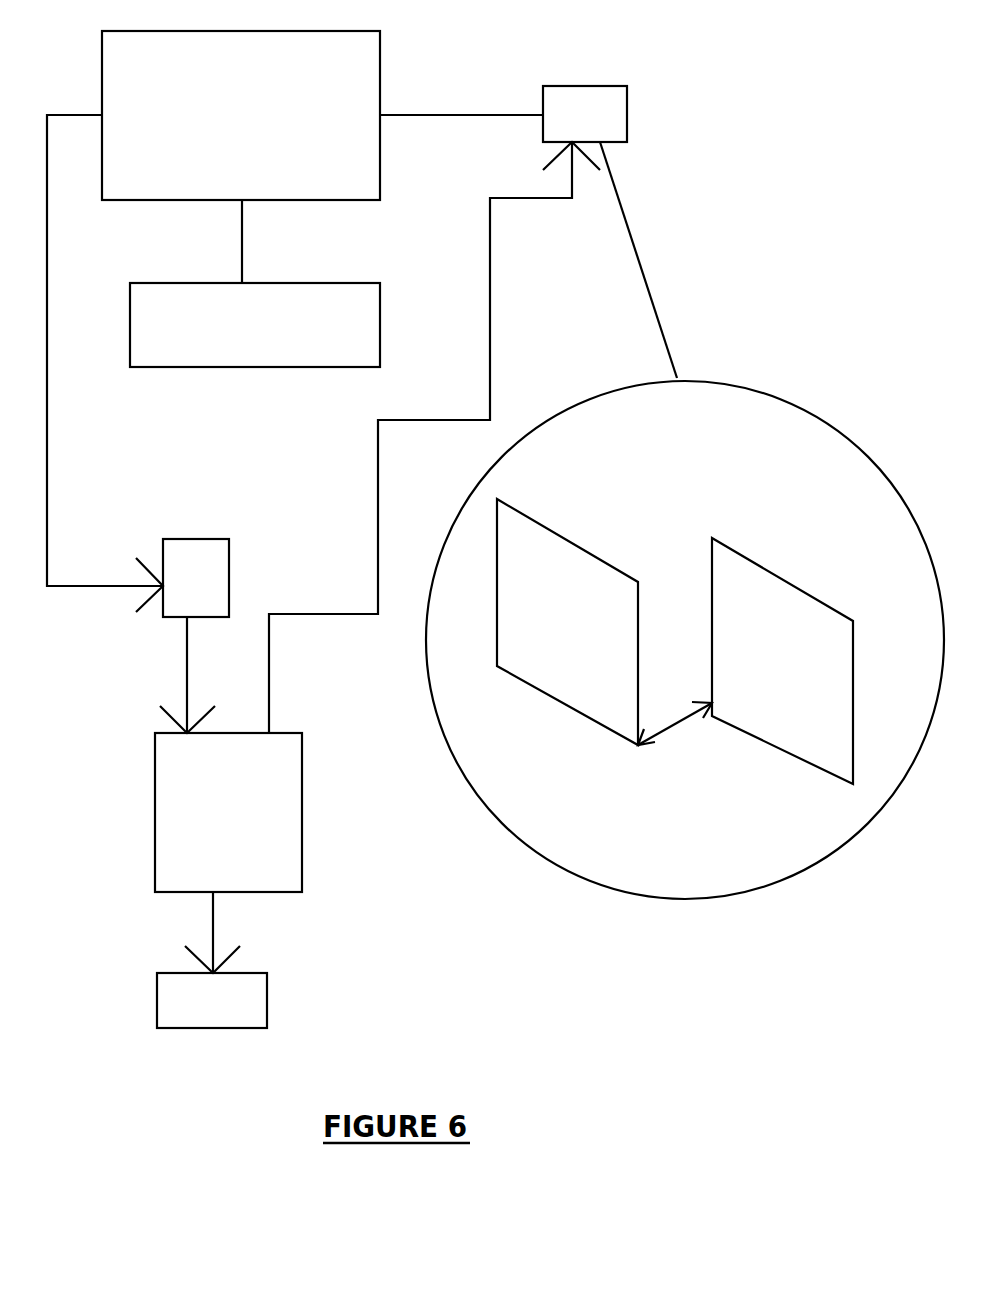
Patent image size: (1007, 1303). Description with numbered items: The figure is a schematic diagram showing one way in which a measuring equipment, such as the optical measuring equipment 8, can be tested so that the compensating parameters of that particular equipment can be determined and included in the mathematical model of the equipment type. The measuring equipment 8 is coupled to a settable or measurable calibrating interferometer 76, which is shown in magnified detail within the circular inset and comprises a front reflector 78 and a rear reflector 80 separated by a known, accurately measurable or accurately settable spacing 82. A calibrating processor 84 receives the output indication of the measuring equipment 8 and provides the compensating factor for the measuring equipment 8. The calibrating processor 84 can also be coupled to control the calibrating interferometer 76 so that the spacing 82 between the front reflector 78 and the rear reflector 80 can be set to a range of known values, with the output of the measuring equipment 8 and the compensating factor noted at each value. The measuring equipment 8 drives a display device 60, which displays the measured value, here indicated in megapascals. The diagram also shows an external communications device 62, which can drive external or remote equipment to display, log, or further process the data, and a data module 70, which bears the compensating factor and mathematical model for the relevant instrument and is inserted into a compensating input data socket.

The optical measuring equipment 8 is at (347, 79).
The display device 60 is at (370, 335).
The calibrating interferometer 76 is at (608, 118).
The external communications device 62 is at (218, 572).
The calibrating processor 84 is at (282, 773).
The data module 70 is at (242, 998).
The front reflector 78 is at (562, 530).
The rear reflector 80 is at (769, 569).
The spacing 82 is at (688, 716).